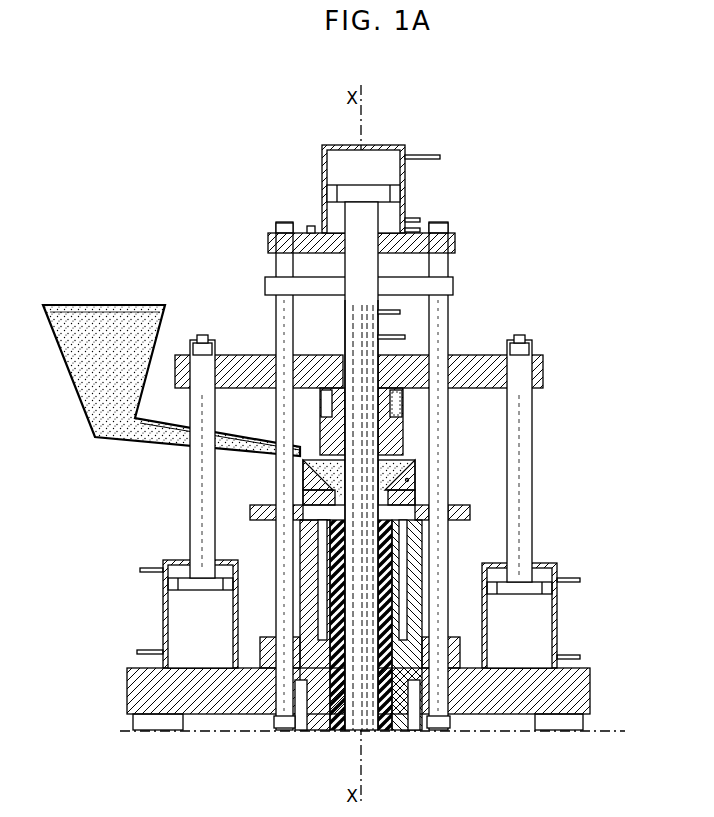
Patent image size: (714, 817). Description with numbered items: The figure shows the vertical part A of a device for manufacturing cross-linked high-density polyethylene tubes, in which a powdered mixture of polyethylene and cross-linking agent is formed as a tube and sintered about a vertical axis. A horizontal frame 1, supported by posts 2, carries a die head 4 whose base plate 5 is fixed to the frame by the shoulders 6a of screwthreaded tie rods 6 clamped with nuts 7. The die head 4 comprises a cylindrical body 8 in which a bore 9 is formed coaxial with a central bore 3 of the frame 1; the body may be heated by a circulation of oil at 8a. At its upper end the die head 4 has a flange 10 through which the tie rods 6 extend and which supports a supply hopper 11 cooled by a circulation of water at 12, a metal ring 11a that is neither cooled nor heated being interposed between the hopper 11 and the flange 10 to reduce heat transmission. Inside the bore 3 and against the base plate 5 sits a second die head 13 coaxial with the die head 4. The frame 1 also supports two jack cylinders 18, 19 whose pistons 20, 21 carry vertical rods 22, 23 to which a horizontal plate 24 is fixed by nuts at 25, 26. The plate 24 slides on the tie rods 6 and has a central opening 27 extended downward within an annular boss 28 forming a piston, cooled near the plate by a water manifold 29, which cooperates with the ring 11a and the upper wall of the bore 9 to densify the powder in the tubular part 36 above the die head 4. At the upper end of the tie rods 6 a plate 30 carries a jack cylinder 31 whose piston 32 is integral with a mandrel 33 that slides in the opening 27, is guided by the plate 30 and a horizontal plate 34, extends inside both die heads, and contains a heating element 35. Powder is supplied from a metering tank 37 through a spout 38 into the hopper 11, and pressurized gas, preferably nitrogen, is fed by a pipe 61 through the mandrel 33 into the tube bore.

The horizontal frame 1 is at (590, 690).
The posts 2 is at (163, 724).
The central bore 3 is at (301, 730).
The die head 4 is at (420, 556).
The base plate 5 is at (462, 652).
The screwthreaded tie rods 6 is at (278, 600).
The shoulder 6a is at (446, 640).
The nuts 7 is at (280, 730).
The cylindrical body 8 is at (300, 572).
The oil circulation 8a is at (318, 542).
The bore 9 is at (320, 620).
The flange 10 is at (470, 513).
The supply hopper 11 is at (415, 472).
The metal ring 11a is at (415, 498).
The water circulation 12 is at (300, 480).
The die head 13 is at (412, 730).
The jack cylinder 18 is at (163, 628).
The jack cylinder 19 is at (557, 628).
The piston 20 is at (216, 585).
The piston 21 is at (510, 590).
The vertical rod 22 is at (190, 494).
The vertical rod 23 is at (532, 484).
The horizontal plate 24 is at (470, 365).
The nut 25 is at (207, 343).
The nut 26 is at (529, 352).
The opening 27 is at (352, 360).
The annular boss 28 is at (385, 445).
The water manifold 29 is at (402, 406).
The plate 30 is at (440, 233).
The jack cylinder 31 is at (322, 170).
The piston 32 is at (373, 192).
The mandrel 33 is at (345, 268).
The horizontal plate 34 is at (445, 287).
The heating element 35 is at (440, 602).
The tubular part 36 is at (348, 494).
The metering tank 37 is at (80, 402).
The spout 38 is at (174, 444).
The pipe 61 is at (400, 313).
The vertical part A is at (545, 468).